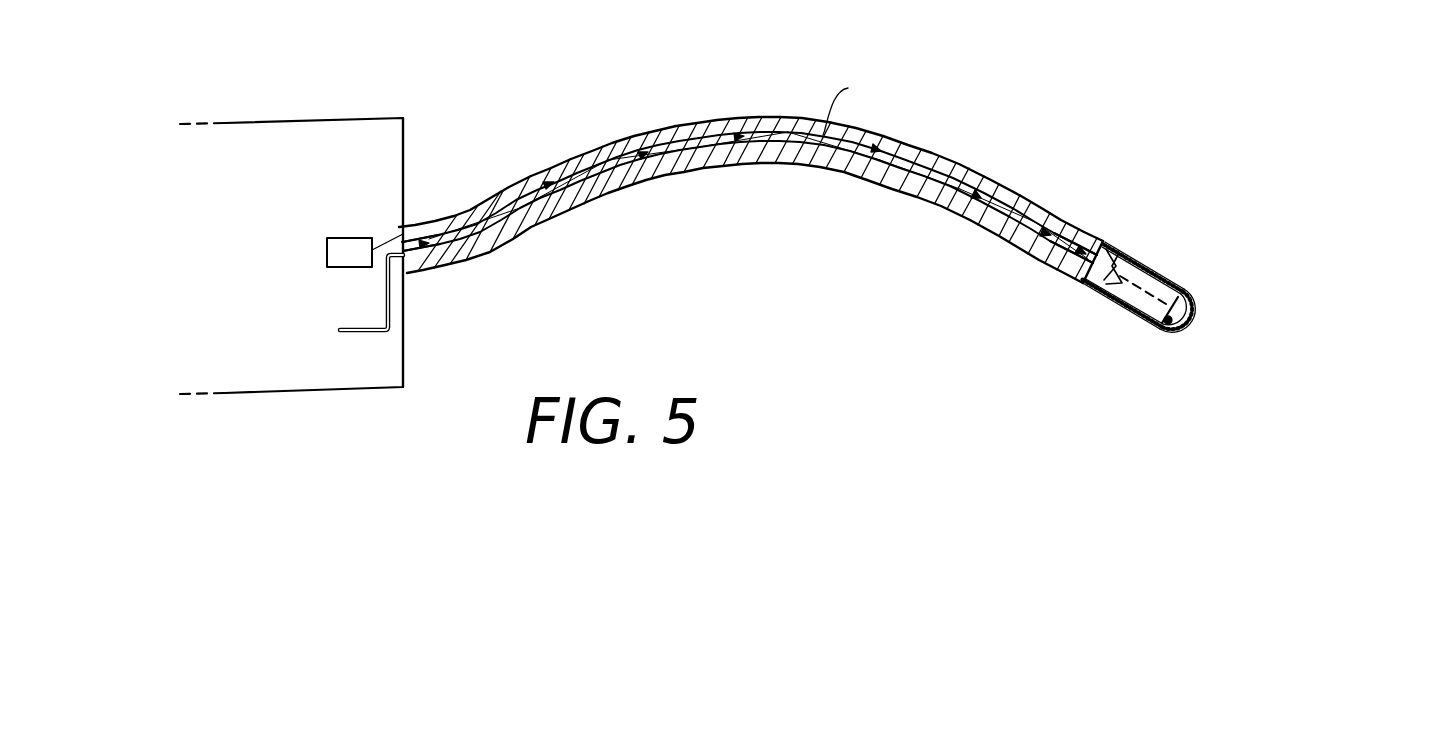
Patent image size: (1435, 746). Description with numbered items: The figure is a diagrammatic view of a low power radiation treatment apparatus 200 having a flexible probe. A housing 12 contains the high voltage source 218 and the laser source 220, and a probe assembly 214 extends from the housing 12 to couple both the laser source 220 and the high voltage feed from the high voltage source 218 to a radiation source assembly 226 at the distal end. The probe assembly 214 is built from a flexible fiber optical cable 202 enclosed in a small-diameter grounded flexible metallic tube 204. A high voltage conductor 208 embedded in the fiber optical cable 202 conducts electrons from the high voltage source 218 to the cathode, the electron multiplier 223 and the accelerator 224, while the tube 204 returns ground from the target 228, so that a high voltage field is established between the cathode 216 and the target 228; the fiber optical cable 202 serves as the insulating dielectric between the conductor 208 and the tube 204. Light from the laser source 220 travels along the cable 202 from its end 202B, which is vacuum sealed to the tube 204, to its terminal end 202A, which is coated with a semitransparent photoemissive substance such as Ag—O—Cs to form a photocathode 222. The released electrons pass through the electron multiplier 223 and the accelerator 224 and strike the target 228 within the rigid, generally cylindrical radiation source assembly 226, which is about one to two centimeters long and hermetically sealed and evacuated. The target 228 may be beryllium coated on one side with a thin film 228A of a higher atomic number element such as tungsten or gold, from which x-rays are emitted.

The radiation treatment apparatus 200 is at (624, 38).
The housing 12 is at (402, 364).
The fiber optical cable 202 is at (575, 163).
The terminal end of the fiber optical cable 202A is at (1078, 278).
The end of the fiber optical cable 202B is at (403, 238).
The flexible metallic tube 204 is at (949, 163).
The high voltage conductor 208 is at (404, 320).
The probe assembly 214 is at (703, 172).
The cathode 216 is at (1180, 296).
The high voltage source 218 is at (183, 328).
The laser source 220 is at (327, 257).
The photocathode 222 is at (1108, 254).
The electron multiplier 223 is at (1085, 288).
The accelerator 224 is at (1117, 300).
The radiation source assembly 226 is at (1134, 322).
The target 228 is at (1195, 306).
The thin film layer 228A is at (1176, 327).